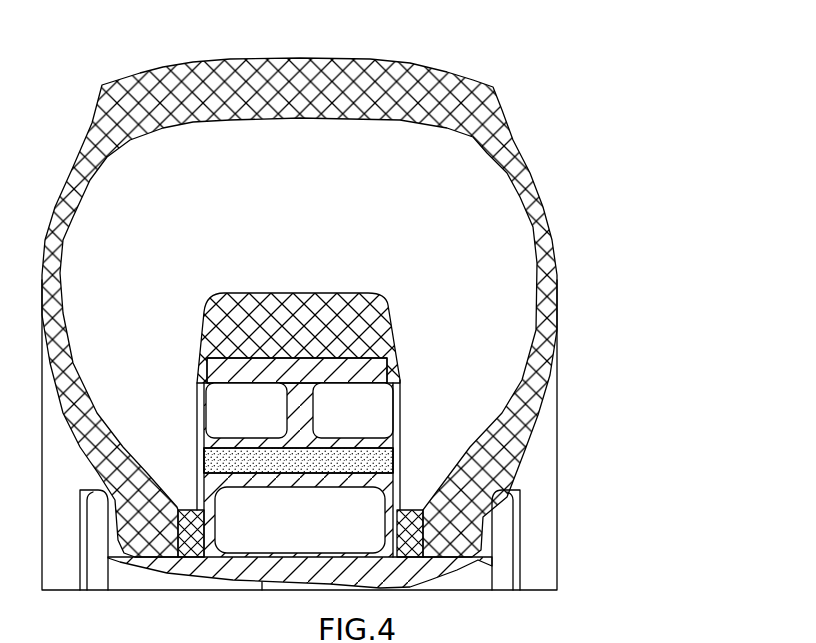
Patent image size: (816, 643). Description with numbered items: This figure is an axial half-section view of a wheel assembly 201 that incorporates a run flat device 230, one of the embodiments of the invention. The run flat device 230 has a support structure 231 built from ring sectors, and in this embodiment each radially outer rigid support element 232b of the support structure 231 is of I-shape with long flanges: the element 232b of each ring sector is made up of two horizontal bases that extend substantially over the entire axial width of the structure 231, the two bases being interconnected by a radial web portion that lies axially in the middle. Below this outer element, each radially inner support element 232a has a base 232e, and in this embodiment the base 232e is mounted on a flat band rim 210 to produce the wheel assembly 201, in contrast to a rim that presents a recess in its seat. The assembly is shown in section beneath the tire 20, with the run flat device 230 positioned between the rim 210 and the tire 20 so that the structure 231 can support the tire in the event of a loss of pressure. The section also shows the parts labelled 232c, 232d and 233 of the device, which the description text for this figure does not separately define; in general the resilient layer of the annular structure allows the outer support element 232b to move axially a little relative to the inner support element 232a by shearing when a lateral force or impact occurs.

The tire 20 is at (481, 72).
The wheel assembly 201 is at (566, 124).
The flat band rim 210 is at (145, 590).
The run flat device 230 is at (367, 233).
The support structure 231 is at (298, 391).
The radially inner support element 232a is at (400, 467).
The radially outer rigid support element 232b is at (377, 370).
The left side wall of housing 232c is at (197, 445).
The cap of housing 232d is at (228, 298).
The base 232e is at (262, 558).
The fixing member 233 is at (187, 517).